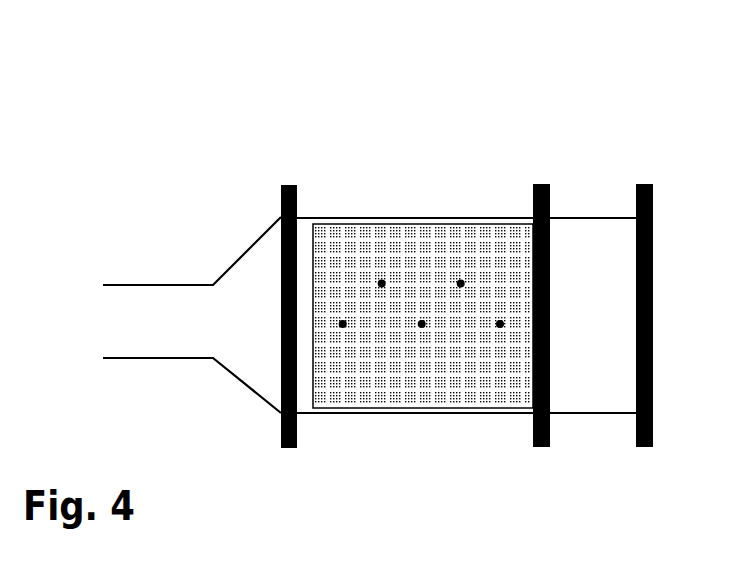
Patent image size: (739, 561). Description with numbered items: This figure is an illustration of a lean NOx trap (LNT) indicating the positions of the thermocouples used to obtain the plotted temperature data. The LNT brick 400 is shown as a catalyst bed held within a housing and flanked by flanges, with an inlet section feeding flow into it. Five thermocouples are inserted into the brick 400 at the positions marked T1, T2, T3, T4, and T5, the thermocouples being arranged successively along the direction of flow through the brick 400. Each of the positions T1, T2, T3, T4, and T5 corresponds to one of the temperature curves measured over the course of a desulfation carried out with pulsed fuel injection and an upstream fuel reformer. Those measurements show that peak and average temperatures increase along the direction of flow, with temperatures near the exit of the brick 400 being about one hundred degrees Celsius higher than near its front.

The LNT brick 400 is at (180, 200).
The thermocouple position T1 is at (343, 324).
The thermocouple position T2 is at (382, 283).
The thermocouple position T3 is at (422, 324).
The thermocouple position T4 is at (461, 283).
The thermocouple position T5 is at (500, 324).